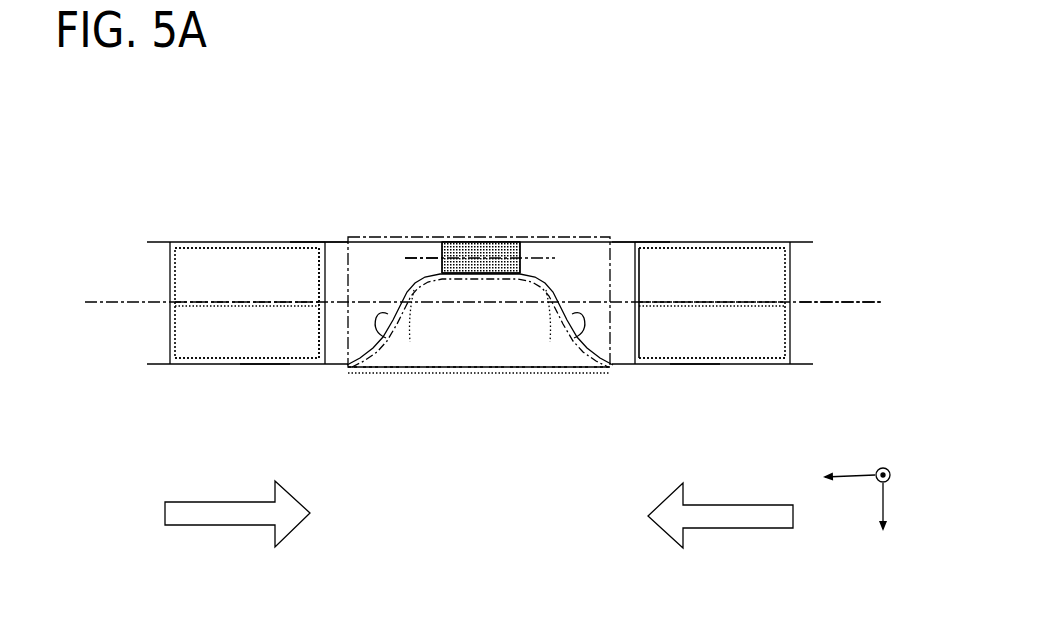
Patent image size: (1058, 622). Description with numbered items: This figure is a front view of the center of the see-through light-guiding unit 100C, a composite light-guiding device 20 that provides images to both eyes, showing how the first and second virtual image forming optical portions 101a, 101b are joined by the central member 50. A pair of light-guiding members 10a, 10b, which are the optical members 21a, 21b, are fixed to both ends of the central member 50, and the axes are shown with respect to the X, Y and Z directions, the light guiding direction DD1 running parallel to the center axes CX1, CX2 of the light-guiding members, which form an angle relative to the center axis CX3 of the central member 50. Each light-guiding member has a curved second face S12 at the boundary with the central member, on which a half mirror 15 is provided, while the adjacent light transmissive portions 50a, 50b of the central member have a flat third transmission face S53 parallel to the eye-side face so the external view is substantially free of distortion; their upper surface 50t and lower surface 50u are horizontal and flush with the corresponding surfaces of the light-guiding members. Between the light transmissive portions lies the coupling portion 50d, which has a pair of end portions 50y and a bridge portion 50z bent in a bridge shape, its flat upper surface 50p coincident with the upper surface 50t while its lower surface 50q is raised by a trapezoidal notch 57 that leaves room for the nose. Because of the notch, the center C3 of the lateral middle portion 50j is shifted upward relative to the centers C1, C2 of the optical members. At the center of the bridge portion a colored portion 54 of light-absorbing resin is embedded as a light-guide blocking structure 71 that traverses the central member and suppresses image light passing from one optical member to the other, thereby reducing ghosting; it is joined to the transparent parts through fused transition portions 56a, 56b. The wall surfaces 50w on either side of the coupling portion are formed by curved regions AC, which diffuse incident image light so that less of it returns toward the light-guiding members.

The see-through light-guiding unit 100C is at (495, 213).
The light-guiding device 20 is at (480, 303).
The light-guiding member 10a is at (197, 263).
The optical member 21a is at (165, 240).
The light-guiding member 10b is at (764, 263).
The optical member 21b is at (800, 240).
The first virtual image forming optical portion 101a is at (186, 210).
The second virtual image forming optical portion 101b is at (772, 210).
The half mirror 15 is at (222, 242).
The central member 50 is at (570, 158).
The light transmissive portion 50a is at (275, 262).
The light transmissive portion 50b is at (692, 262).
The upper surface 50t is at (298, 242).
The lower surface 50u is at (260, 367).
The end portions 50y is at (338, 242).
The bridge portion 50z is at (395, 242).
The coupling portion 50d is at (427, 216).
The lateral middle portion 50j is at (490, 242).
The upper surface 50p is at (510, 242).
The lower surface 50q is at (473, 276).
The wall surfaces 50w is at (386, 350).
The transition portion 56a is at (385, 242).
The transition portion 56b is at (585, 242).
The colored portion 54 is at (483, 332).
The light-guide blocking structure 71 is at (500, 274).
The notch 57 is at (452, 372).
The curved regions AC is at (362, 418).
The center C1 is at (202, 305).
The center C2 is at (755, 305).
The center C3 is at (478, 242).
The center axis CX1 is at (113, 305).
The center axis CX2 is at (853, 305).
The center axis CX3 is at (535, 242).
The second face S12 is at (240, 333).
The third transmission face S53 is at (292, 342).
The light guiding direction DD1 is at (215, 515).
The X direction X is at (837, 468).
The Y direction Y is at (898, 510).
The Z direction Z is at (897, 468).